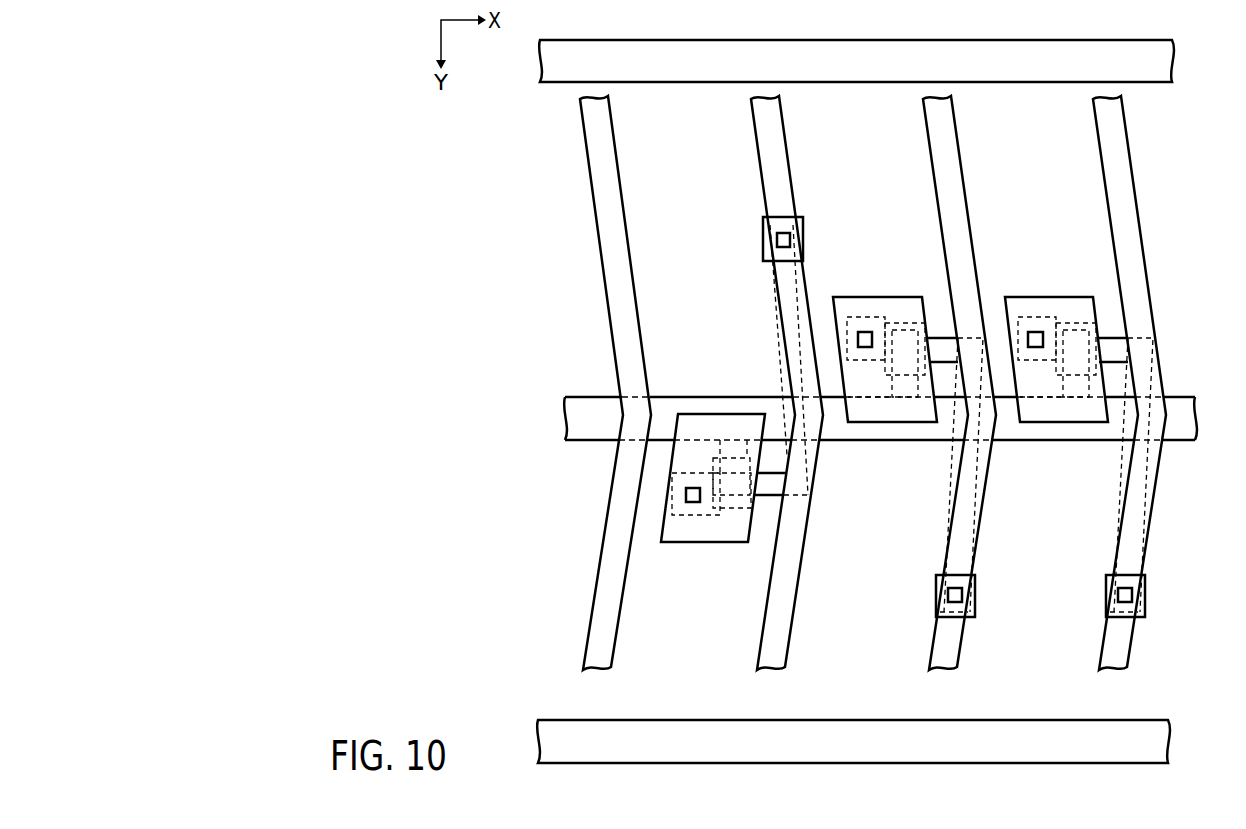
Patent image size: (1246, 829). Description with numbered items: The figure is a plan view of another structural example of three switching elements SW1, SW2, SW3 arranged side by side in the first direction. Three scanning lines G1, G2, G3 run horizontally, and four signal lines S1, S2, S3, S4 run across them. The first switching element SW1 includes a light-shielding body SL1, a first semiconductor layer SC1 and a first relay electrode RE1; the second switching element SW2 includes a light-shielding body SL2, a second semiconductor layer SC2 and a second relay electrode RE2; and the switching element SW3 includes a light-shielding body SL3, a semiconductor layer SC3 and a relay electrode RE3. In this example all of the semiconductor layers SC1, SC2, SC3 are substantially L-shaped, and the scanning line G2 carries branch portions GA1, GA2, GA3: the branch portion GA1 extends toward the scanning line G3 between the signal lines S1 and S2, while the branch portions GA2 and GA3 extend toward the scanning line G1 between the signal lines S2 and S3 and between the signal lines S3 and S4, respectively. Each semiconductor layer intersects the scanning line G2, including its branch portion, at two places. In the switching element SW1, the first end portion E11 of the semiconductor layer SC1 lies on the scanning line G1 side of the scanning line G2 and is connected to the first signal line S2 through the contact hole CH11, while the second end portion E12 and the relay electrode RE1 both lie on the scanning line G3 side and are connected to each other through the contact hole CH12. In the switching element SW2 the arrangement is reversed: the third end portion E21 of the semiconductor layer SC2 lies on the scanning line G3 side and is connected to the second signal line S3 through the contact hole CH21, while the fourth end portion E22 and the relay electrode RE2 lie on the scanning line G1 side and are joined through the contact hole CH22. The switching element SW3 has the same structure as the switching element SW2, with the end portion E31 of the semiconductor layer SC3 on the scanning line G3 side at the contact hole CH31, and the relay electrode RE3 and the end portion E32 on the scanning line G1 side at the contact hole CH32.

The scanning line G1 is at (553, 61).
The scanning line G2 is at (580, 416).
The scanning line G3 is at (555, 742).
The signal line S1 is at (594, 672).
The first signal line S2 is at (766, 672).
The second signal line S3 is at (937, 672).
The signal line S4 is at (1107, 672).
The first switching element SW1 is at (731, 396).
The second switching element SW2 is at (914, 436).
The switching element SW3 is at (1084, 436).
The branch portion GA1 is at (758, 483).
The branch portion GA2 is at (890, 352).
The branch portion GA3 is at (1061, 352).
The first semiconductor layer SC1 is at (770, 500).
The second semiconductor layer SC2 is at (936, 337).
The semiconductor layer SC3 is at (1112, 337).
The light-shielding body SL1 is at (728, 510).
The light-shielding body SL2 is at (906, 330).
The light-shielding body SL3 is at (1077, 330).
The first relay electrode RE1 is at (662, 543).
The second relay electrode RE2 is at (878, 423).
The relay electrode RE3 is at (1048, 423).
The first end portion E11 is at (764, 236).
The second end portion E12 is at (676, 518).
The third end portion E21 is at (936, 604).
The fourth end portion E22 is at (847, 318).
The end portion E31 is at (1106, 604).
The end portion E32 is at (1018, 318).
The contact hole CH11 is at (786, 232).
The contact hole CH12 is at (692, 504).
The contact hole CH21 is at (947, 595).
The contact hole CH22 is at (865, 331).
The contact hole CH31 is at (1117, 595).
The contact hole CH32 is at (1035, 331).